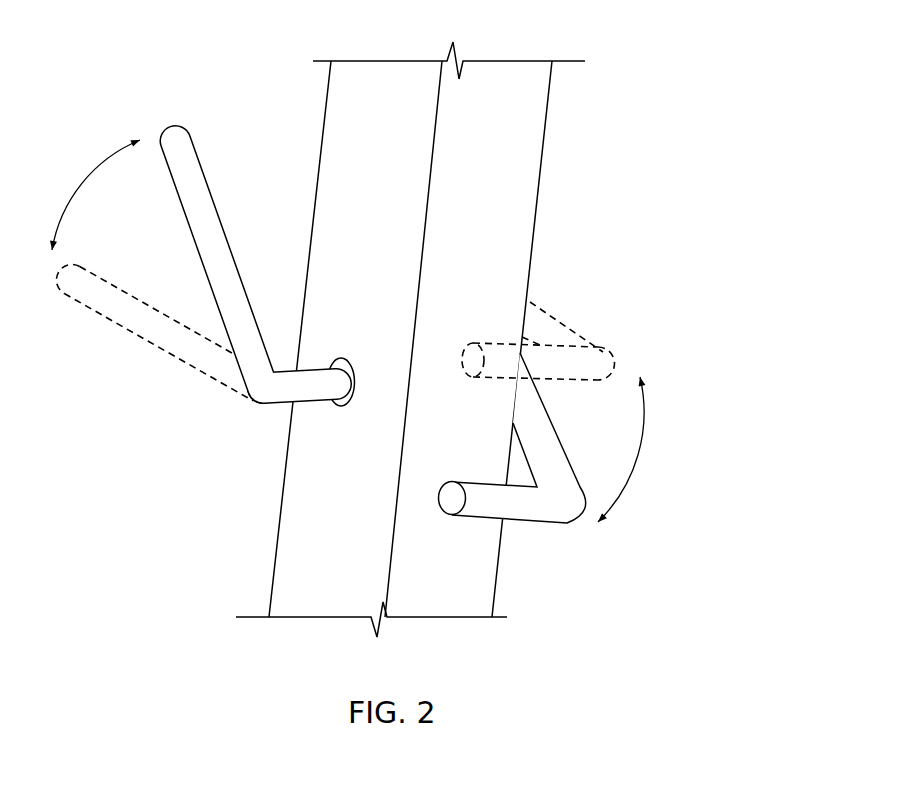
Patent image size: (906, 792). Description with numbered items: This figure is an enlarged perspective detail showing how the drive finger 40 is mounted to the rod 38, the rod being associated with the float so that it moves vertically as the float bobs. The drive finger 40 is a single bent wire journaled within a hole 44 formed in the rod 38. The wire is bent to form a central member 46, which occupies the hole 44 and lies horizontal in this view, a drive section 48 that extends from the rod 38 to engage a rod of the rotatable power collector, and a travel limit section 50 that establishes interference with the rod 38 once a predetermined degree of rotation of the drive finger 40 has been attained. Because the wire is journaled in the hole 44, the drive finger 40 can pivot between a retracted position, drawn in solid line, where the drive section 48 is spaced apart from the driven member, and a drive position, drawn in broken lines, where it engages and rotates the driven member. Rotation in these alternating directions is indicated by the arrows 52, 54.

The rod 38 is at (491, 171).
The drive finger 40 is at (419, 254).
The hole 44 is at (338, 359).
The central member 46 is at (304, 398).
The drive section 48 is at (204, 195).
The travel limit section 50 is at (617, 407).
The arrow 52 is at (83, 183).
The arrow 54 is at (638, 447).